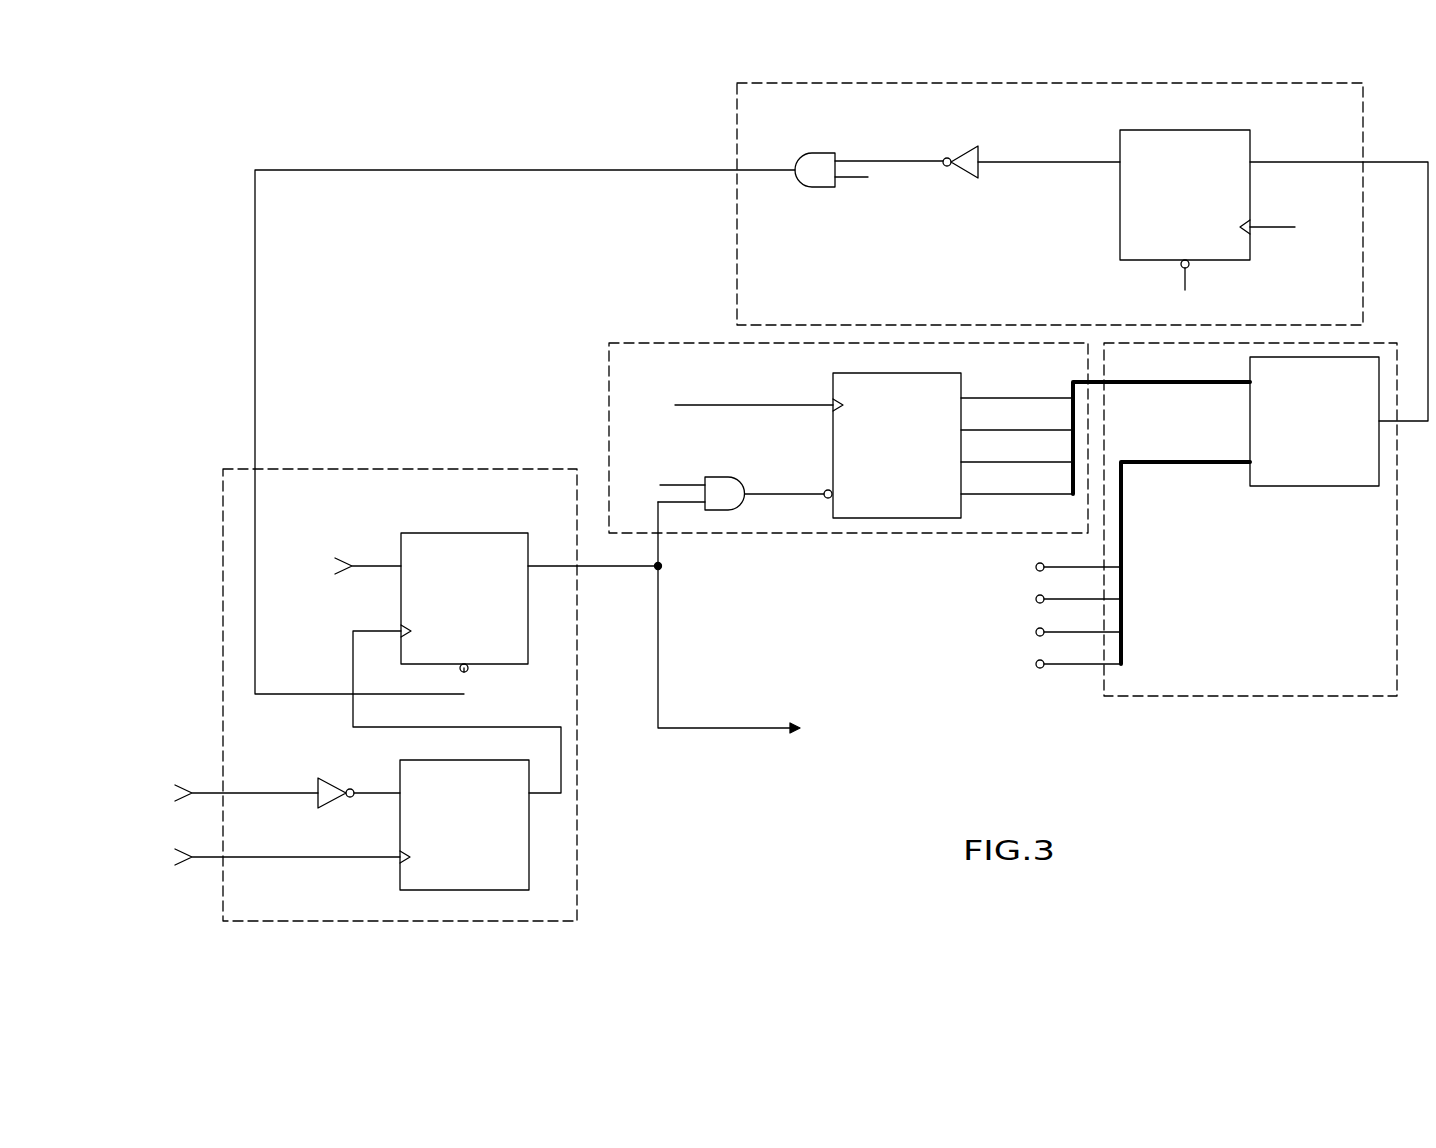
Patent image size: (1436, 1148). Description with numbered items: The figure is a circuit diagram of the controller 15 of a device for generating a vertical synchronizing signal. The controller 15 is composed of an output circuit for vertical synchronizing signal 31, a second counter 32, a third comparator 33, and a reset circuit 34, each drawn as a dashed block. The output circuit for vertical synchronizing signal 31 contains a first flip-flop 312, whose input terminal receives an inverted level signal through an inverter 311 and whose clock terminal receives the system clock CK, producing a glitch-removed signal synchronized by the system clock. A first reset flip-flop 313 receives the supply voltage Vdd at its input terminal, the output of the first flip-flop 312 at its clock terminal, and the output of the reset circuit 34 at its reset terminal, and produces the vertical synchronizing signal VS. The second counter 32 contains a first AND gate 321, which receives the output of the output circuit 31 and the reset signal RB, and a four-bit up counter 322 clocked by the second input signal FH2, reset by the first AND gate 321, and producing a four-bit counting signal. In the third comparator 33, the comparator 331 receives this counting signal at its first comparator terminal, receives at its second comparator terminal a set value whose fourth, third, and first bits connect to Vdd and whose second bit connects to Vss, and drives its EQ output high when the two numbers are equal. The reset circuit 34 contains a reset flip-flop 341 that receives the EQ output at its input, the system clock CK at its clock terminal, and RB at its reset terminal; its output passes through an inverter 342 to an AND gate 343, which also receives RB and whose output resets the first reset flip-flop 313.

The controller 15 is at (465, 128).
The output circuit for vertical synchronizing signal 31 is at (408, 469).
The second counter 32 is at (609, 386).
The third comparator 33 is at (1250, 698).
The reset circuit 34 is at (737, 137).
The inverter 311 is at (330, 778).
The first flip-flop 312 is at (400, 830).
The first reset flip-flop 313 is at (465, 533).
The first AND gate 321 is at (723, 477).
The 4-bit up counter 322 is at (833, 453).
The third comparator 331 is at (1315, 488).
The reset flip-flop 341 is at (1120, 205).
The inverter 342 is at (972, 146).
The AND gate 343 is at (820, 153).